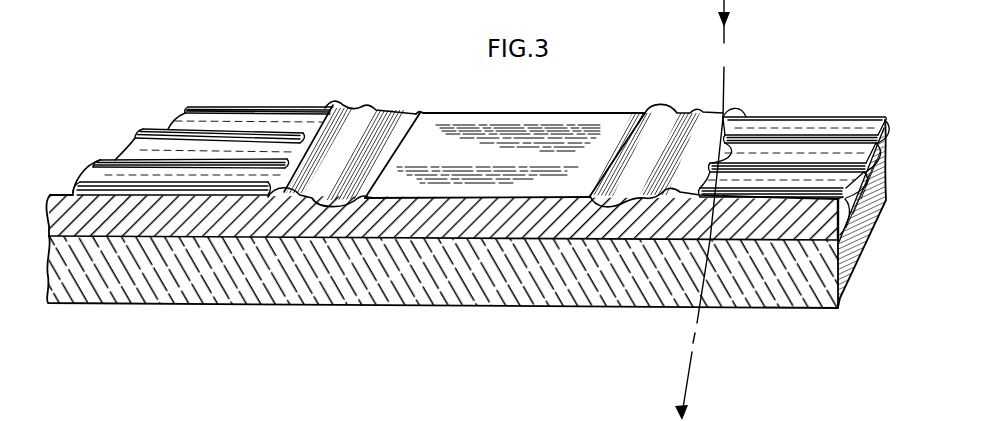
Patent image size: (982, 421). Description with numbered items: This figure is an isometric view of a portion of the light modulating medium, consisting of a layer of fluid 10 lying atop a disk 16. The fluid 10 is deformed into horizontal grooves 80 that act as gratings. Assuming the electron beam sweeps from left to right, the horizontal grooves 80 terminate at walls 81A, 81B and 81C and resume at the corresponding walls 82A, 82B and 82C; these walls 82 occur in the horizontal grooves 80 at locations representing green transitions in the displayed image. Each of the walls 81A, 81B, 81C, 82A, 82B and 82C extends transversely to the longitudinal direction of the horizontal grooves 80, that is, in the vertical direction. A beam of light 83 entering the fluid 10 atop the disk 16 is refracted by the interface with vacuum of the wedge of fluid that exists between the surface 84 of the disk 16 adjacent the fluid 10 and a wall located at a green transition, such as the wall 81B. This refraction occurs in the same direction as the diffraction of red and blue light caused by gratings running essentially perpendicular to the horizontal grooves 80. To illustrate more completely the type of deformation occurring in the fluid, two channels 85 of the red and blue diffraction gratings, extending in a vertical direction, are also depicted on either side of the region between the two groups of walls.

The fluid 10 is at (63, 212).
The disk 16 is at (92, 283).
The horizontal grooves 80 is at (156, 157).
The wall 81A is at (273, 183).
The wall 81B is at (287, 155).
The wall 81C is at (292, 130).
The walls 82 is at (808, 193).
The wall 82A is at (705, 185).
The wall 82B is at (740, 162).
The wall 82C is at (735, 128).
The beam of light 83 is at (688, 368).
The surface 84 is at (413, 238).
The channels 85 is at (372, 143).